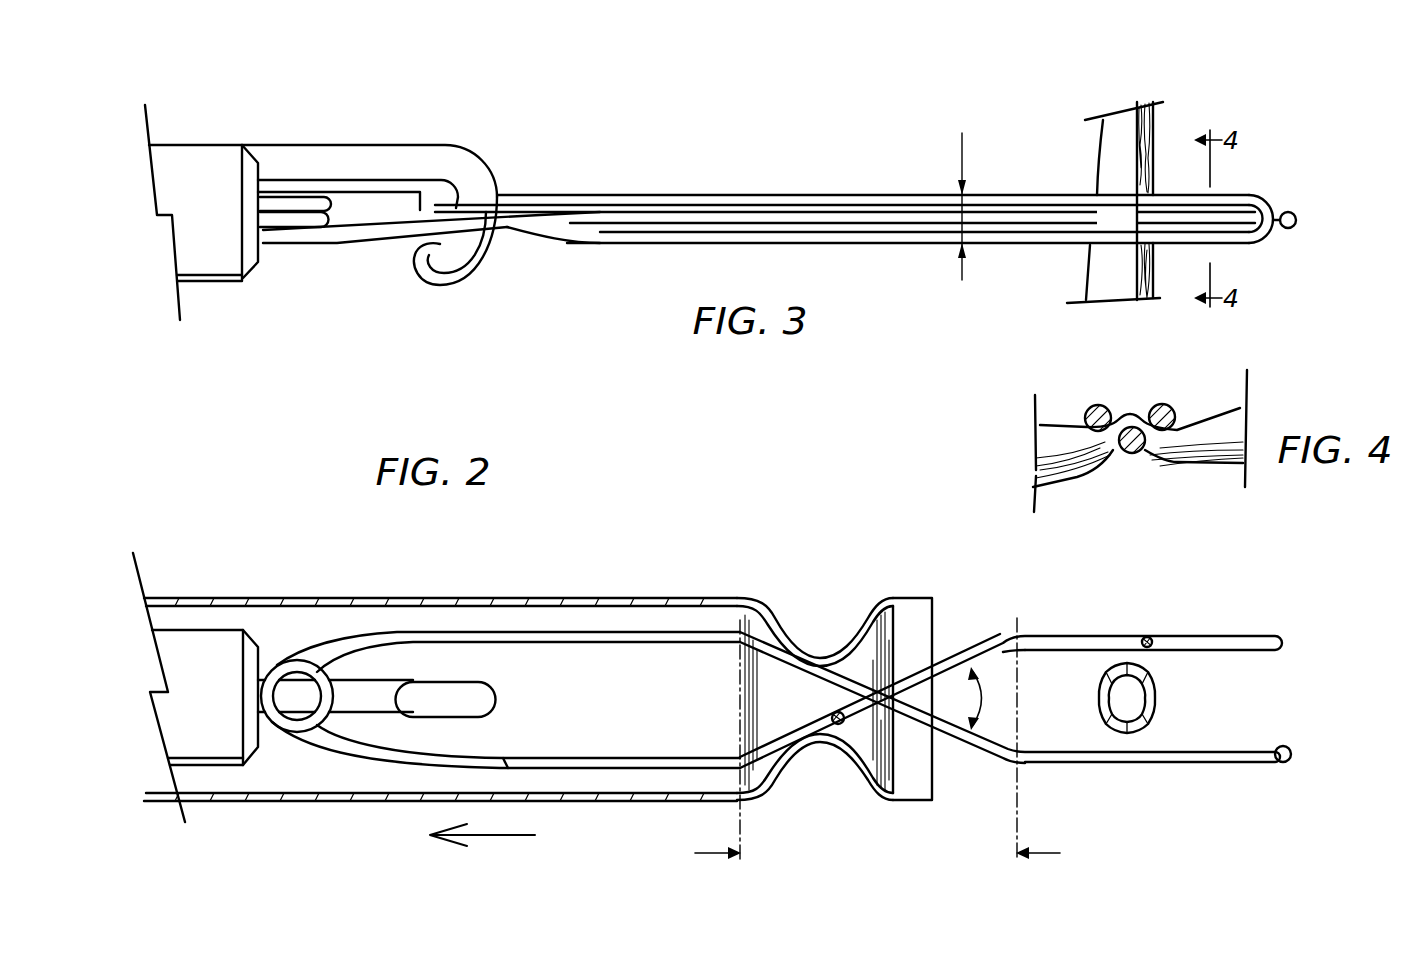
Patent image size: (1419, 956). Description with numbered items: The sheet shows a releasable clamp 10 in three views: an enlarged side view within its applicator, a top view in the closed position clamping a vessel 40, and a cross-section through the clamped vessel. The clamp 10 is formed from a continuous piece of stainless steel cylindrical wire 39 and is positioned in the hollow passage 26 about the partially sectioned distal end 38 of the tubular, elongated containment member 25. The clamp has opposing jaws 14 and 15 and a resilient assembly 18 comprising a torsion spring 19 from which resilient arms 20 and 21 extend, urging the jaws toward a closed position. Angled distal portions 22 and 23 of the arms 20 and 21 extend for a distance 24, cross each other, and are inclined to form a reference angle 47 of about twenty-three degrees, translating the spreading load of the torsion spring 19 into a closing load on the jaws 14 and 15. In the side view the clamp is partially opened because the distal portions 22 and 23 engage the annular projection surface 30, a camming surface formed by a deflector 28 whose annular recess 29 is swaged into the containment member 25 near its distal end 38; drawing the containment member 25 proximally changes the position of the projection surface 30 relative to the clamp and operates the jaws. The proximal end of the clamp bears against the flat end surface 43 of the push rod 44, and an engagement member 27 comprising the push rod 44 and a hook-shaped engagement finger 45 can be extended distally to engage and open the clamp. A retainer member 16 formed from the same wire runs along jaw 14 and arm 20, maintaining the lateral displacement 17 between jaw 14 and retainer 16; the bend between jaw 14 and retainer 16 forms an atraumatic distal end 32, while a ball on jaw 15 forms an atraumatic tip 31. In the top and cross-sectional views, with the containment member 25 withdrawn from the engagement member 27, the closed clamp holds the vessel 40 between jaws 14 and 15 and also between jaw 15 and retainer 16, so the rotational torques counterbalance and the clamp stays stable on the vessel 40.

In FIG. 3, the releasable clamp 10 is at (690, 112).
In FIG. 2, the releasable clamp 10 is at (976, 532).
In FIG. 4, the releasable clamp 10 is at (1146, 389).
In FIG. 3, the opposing jaw 14 is at (1022, 193).
In FIG. 2, the opposing jaw 14 is at (1072, 637).
In FIG. 4, the opposing jaw 14 is at (1170, 404).
In FIG. 3, the opposing jaw 15 is at (1165, 222).
In FIG. 2, the opposing jaw 15 is at (1127, 757).
In FIG. 4, the opposing jaw 15 is at (1140, 455).
In FIG. 3, the retainer member 16 is at (1060, 243).
In FIG. 2, the retainer member 16 is at (1187, 637).
In FIG. 4, the retainer member 16 is at (1092, 405).
In FIG. 3, the lateral displacement 17 is at (962, 153).
In FIG. 3, the resilient assembly 18 is at (553, 188).
In FIG. 2, the resilient assembly 18 is at (457, 621).
In FIG. 3, the torsion spring 19 is at (318, 245).
In FIG. 2, the torsion spring 19 is at (318, 667).
In FIG. 3, the resilient arm 20 is at (583, 195).
In FIG. 2, the resilient arm 20 is at (378, 767).
In FIG. 3, the resilient arm 21 is at (652, 217).
In FIG. 2, the resilient arm 21 is at (403, 633).
In FIG. 3, the angled distal portion 22 is at (825, 195).
In FIG. 2, the angled distal portion 22 is at (972, 652).
In FIG. 2, the angled distal portion 23 is at (945, 730).
In FIG. 2, the distance 24 is at (701, 740).
In FIG. 2, the tubular elongated containment member 25 is at (505, 598).
In FIG. 2, the hollow passage 26 is at (548, 612).
In FIG. 3, the engagement member 27 is at (418, 146).
In FIG. 2, the engagement member 27 is at (349, 672).
In FIG. 2, the deflector 28 is at (819, 633).
In FIG. 2, the annular recess 29 is at (858, 627).
In FIG. 2, the annular projection surface 30 is at (745, 600).
In FIG. 3, the atraumatic tip 31 is at (1297, 215).
In FIG. 2, the atraumatic tip 31 is at (1292, 758).
In FIG. 3, the atraumatic distal end 32 is at (1268, 193).
In FIG. 2, the atraumatic distal end 32 is at (1277, 642).
In FIG. 2, the distal end 38 is at (917, 807).
In FIG. 3, the cylindrical wire 39 is at (568, 247).
In FIG. 2, the cylindrical wire 39 is at (529, 771).
In FIG. 3, the vessel 40 is at (1150, 130).
In FIG. 2, the vessel 40 is at (1157, 698).
In FIG. 4, the vessel 40 is at (1083, 480).
In FIG. 3, the flat end surface 43 is at (262, 240).
In FIG. 2, the flat end surface 43 is at (260, 655).
In FIG. 3, the push rod 44 is at (213, 150).
In FIG. 2, the push rod 44 is at (183, 637).
In FIG. 3, the engagement finger 45 is at (485, 184).
In FIG. 2, the engagement finger 45 is at (367, 710).
In FIG. 2, the reference angle 47 is at (990, 700).